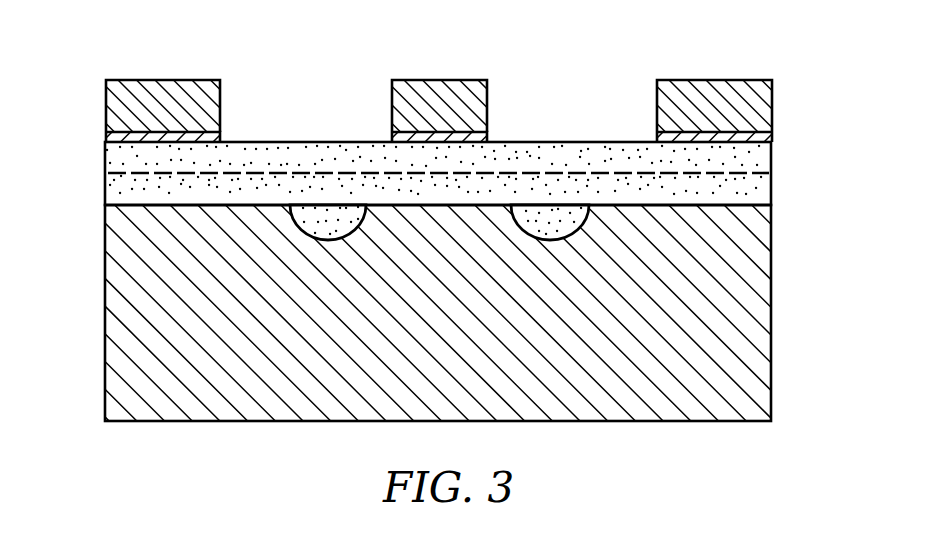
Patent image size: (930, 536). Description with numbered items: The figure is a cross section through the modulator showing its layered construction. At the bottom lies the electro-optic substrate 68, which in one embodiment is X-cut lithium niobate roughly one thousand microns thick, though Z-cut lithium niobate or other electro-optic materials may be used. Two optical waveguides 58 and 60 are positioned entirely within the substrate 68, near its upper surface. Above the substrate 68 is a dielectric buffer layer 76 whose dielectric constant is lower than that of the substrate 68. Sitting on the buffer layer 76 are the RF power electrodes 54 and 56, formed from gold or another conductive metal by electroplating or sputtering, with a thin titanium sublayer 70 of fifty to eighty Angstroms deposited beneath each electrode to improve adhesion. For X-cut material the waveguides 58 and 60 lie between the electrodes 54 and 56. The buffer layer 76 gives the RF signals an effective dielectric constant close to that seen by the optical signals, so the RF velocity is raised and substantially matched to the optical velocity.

The RF power electrode 54 is at (738, 47).
The RF power electrode 56 is at (441, 79).
The optical waveguide 58 is at (305, 244).
The optical waveguide 60 is at (568, 235).
The substrate 68 is at (105, 338).
The titanium sublayer 70 is at (795, 116).
The dielectric buffer layer 76 is at (105, 188).